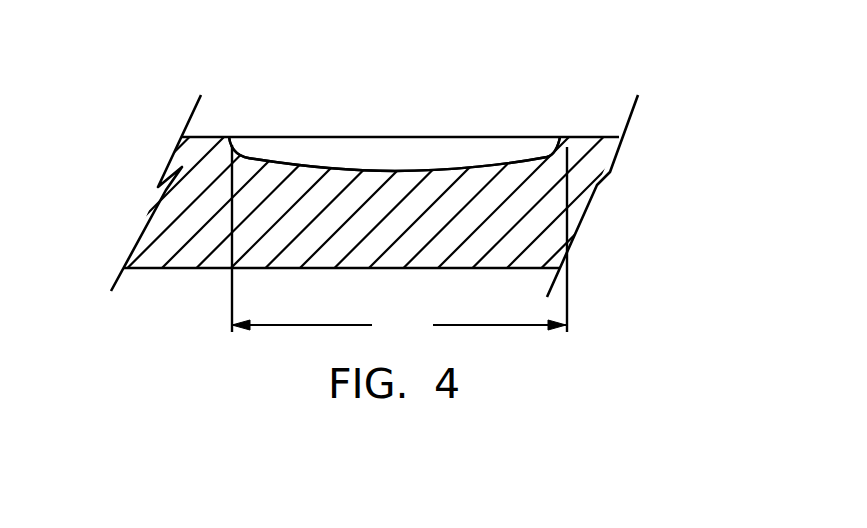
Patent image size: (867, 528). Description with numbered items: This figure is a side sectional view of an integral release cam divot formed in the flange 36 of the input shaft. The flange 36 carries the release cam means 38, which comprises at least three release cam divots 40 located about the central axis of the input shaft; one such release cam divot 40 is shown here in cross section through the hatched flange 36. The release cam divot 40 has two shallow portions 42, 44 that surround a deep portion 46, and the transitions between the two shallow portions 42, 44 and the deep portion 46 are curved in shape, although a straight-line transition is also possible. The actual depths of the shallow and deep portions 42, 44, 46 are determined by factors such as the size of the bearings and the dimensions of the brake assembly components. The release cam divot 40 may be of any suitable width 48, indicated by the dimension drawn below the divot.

The flange 36 is at (589, 173).
The release cam means 38 is at (500, 137).
The release cam divot 40 is at (447, 148).
The shallow portion 42 is at (244, 142).
The shallow portion 44 is at (553, 140).
The deep portion 46 is at (387, 170).
The width 48 is at (399, 245).